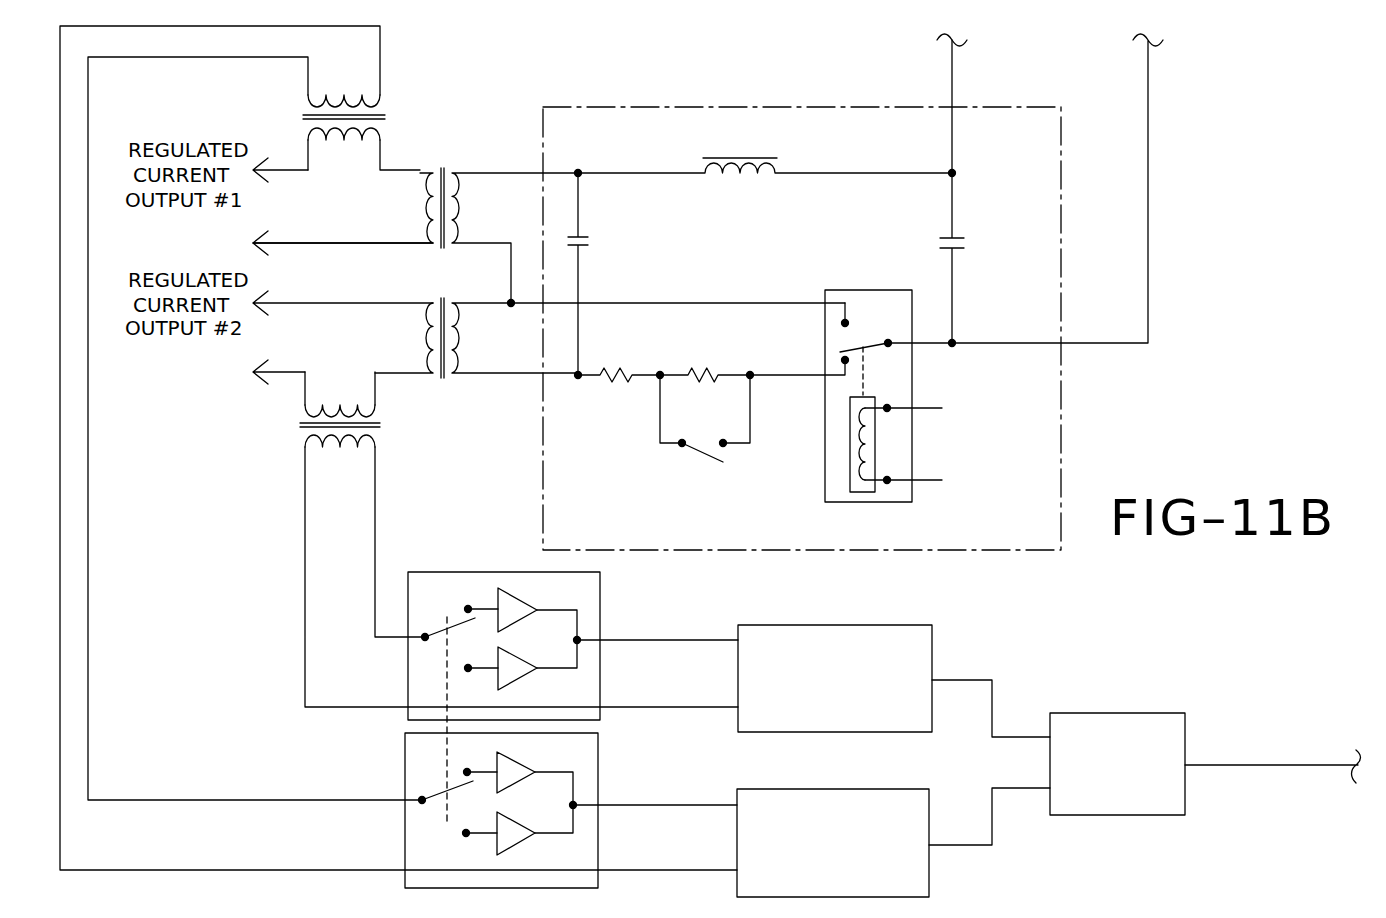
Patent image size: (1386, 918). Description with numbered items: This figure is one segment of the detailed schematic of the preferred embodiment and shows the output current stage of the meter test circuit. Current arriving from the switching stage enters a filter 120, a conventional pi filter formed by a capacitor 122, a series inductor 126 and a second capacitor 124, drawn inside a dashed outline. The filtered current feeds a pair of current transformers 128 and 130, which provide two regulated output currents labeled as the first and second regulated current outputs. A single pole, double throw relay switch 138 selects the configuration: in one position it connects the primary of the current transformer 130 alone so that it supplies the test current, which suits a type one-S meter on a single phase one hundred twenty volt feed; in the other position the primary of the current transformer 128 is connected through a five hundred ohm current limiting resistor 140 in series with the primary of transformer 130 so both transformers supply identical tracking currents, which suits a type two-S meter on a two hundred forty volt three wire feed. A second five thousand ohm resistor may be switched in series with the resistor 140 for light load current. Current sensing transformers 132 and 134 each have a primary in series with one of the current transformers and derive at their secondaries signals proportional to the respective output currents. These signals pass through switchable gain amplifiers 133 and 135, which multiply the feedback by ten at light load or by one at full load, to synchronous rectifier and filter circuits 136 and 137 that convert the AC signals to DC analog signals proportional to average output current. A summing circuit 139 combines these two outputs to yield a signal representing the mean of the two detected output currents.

The filter 120 is at (566, 106).
The capacitor 122 is at (582, 238).
The capacitor 124 is at (958, 238).
The inductor 126 is at (732, 158).
The current transformer 128 is at (449, 378).
The current transformer 130 is at (448, 168).
The current sensing transformer 132 is at (305, 432).
The switchable gain amplifier 133 is at (600, 597).
The current sensing transformer 134 is at (310, 110).
The switchable gain amplifier 135 is at (598, 762).
The synchronous rectifier and filter circuit 136 is at (845, 625).
The synchronous rectifier and filter circuit 137 is at (845, 789).
The single pole, double throw relay switch 138 is at (825, 487).
The summing circuit 139 is at (1107, 713).
The current limiting resistor 140 is at (607, 373).